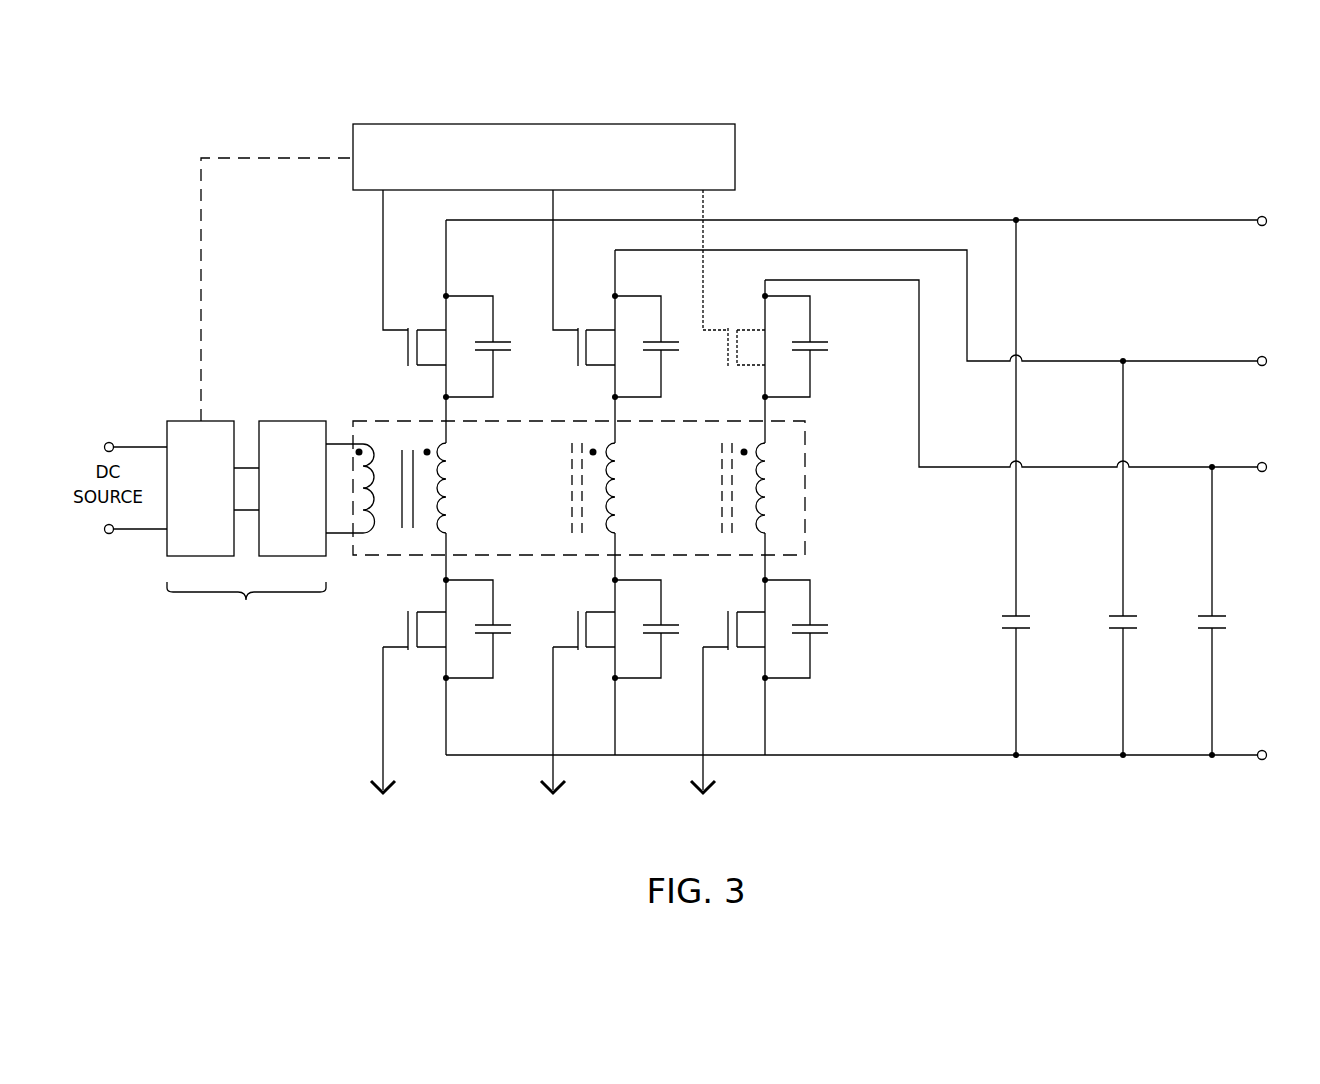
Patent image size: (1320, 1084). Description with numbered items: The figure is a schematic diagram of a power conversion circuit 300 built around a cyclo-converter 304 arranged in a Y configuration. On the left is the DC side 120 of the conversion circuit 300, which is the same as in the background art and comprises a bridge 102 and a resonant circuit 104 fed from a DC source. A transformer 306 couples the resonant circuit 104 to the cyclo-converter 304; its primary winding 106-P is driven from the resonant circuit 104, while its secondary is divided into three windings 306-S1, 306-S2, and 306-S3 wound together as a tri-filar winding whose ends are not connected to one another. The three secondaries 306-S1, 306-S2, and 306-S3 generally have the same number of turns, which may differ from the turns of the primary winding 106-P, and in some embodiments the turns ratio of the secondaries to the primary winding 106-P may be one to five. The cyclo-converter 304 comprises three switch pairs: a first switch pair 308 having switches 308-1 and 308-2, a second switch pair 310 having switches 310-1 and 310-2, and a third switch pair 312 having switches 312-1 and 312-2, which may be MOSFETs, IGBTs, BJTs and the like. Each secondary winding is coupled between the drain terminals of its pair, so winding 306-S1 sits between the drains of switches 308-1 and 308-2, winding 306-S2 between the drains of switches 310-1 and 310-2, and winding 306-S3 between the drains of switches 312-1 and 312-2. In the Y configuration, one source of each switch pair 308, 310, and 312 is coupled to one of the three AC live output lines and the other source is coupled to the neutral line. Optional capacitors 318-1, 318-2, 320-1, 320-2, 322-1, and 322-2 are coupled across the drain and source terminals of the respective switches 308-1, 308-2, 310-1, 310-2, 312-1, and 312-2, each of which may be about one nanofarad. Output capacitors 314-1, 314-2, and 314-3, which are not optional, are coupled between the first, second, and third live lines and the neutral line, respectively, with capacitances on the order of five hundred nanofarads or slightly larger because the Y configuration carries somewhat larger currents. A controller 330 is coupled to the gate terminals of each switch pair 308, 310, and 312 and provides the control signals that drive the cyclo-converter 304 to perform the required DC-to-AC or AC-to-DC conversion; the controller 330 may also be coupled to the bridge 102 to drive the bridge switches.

The power conversion circuit 300 is at (1093, 151).
The cyclo-converter 304 is at (871, 166).
The transformer 306 is at (805, 452).
The secondary winding 306-S1 is at (450, 498).
The secondary winding 306-S2 is at (612, 498).
The secondary winding 306-S3 is at (762, 498).
The primary winding 106-P is at (372, 538).
The bridge 102 is at (187, 497).
The resonant circuit 104 is at (278, 497).
The DC side 120 is at (246, 525).
The switch pair 308 is at (408, 258).
The switch 308-1 is at (411, 318).
The switch 308-2 is at (412, 655).
The switch pair 310 is at (585, 268).
The switch 310-1 is at (581, 318).
The switch 310-2 is at (582, 655).
The switch pair 312 is at (732, 258).
The switch 312-1 is at (732, 318).
The switch 312-2 is at (733, 655).
The capacitor 318-1 is at (493, 388).
The capacitor 318-2 is at (493, 590).
The capacitor 320-1 is at (661, 388).
The capacitor 320-2 is at (661, 590).
The capacitor 322-1 is at (810, 388).
The capacitor 322-2 is at (810, 590).
The output capacitor 314-1 is at (1016, 595).
The output capacitor 314-2 is at (1123, 657).
The output capacitor 314-3 is at (1214, 597).
The controller 330 is at (606, 170).